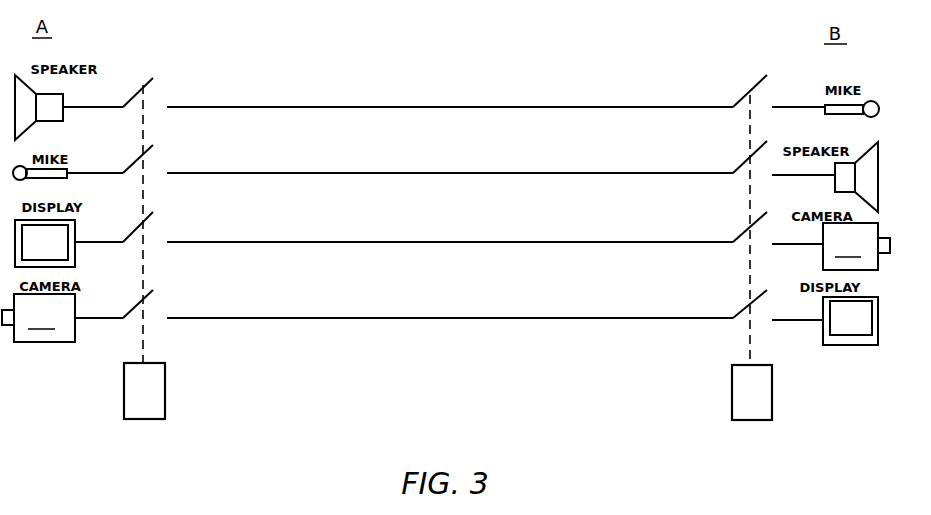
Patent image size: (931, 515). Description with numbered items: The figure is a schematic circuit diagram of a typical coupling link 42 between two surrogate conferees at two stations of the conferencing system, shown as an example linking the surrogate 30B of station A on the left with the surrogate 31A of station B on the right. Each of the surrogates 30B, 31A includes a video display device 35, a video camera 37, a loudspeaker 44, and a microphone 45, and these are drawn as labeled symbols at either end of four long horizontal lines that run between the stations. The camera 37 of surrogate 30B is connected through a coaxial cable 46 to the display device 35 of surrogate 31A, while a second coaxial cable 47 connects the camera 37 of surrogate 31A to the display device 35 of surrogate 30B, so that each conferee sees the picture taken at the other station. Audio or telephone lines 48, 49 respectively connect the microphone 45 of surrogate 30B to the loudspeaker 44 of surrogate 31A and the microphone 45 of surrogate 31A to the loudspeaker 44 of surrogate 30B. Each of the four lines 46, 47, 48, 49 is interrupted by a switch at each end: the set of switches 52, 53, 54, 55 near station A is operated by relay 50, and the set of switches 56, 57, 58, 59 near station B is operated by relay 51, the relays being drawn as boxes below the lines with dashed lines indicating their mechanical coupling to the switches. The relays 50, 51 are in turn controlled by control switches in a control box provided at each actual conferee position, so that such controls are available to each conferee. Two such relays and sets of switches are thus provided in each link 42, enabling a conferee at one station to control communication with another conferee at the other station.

The surrogate 30B is at (114, 92).
The surrogate 31A is at (871, 90).
The video display device 35 is at (76, 232).
The video camera 37 is at (446, 282).
The coupling link 42 is at (445, 91).
The loudspeaker 44 is at (56, 112).
The microphone 45 is at (67, 168).
The coaxial cable 46 is at (502, 320).
The second coaxial cable 47 is at (513, 244).
The audio or telephone line 48 is at (528, 175).
The audio or telephone line 49 is at (542, 109).
The relay 50 is at (157, 397).
The relay 51 is at (763, 392).
The switch 52 is at (156, 290).
The switch 53 is at (156, 212).
The switch 54 is at (154, 144).
The switch 55 is at (154, 77).
The switch 56 is at (748, 310).
The switch 57 is at (748, 238).
The switch 58 is at (748, 167).
The switch 59 is at (752, 98).